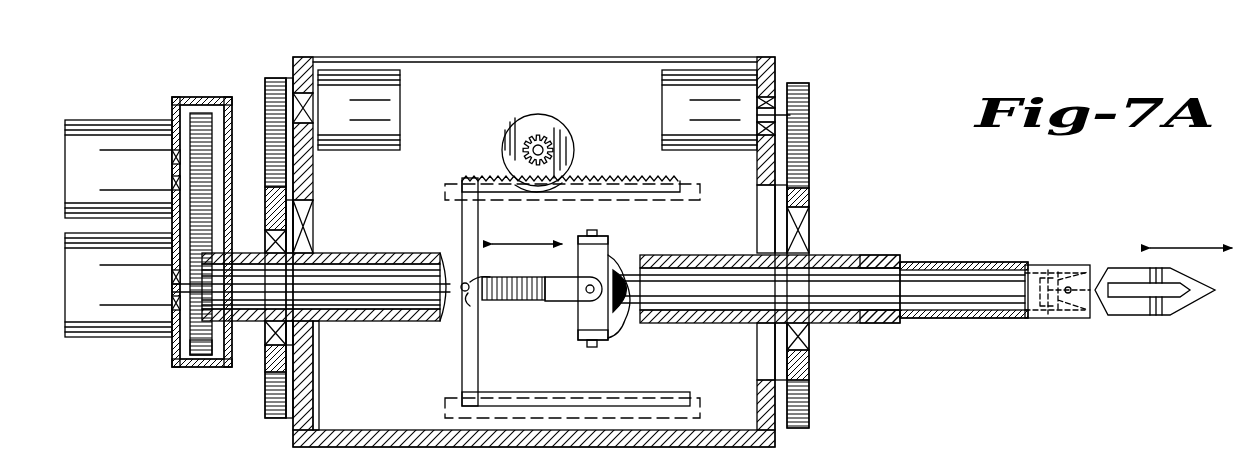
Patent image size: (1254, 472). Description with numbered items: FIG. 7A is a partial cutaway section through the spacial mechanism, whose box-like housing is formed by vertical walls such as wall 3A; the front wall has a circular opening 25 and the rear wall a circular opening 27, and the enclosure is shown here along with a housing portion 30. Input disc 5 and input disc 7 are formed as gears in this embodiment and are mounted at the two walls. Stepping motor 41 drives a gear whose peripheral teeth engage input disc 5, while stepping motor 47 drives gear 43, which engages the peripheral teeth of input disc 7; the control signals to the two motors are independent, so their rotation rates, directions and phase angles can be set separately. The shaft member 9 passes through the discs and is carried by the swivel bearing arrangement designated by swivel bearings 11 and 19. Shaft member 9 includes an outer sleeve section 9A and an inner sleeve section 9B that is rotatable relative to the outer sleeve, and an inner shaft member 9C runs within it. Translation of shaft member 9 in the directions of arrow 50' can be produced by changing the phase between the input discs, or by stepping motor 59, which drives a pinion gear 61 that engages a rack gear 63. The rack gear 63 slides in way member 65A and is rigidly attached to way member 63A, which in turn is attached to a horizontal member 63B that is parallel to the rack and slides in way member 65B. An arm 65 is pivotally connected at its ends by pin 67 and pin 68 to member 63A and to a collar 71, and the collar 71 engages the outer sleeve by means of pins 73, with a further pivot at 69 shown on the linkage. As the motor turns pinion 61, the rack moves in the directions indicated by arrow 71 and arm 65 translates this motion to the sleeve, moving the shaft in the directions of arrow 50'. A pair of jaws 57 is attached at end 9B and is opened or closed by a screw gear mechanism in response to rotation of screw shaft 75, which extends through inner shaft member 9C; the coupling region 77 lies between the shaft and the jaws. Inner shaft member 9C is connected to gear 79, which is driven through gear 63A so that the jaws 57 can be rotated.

The vertical wall 3A is at (776, 70).
The input disc 5 is at (815, 155).
The input disc 7 is at (258, 186).
The shaft member 9 is at (870, 246).
The outer sleeve section 9A is at (1092, 268).
The inner sleeve section 9B is at (890, 256).
The inner shaft member 9C is at (985, 262).
The swivel bearing 11 is at (800, 254).
The swivel bearing 19 is at (262, 236).
The circular opening 25 is at (770, 200).
The circular opening 27 is at (313, 362).
The housing 30 is at (302, 60).
The stepping motor 41 is at (662, 92).
The gear 43 is at (266, 105).
The stepping motor 47 is at (400, 108).
The arrow 50' is at (1192, 227).
The jaws 57 is at (1130, 330).
The stepping motor 59 is at (548, 120).
The pinion gear 61 is at (185, 97).
The rack gear 63 is at (130, 120).
The way member 63A is at (200, 115).
The horizontal member 63B is at (642, 392).
The arm 65 is at (100, 336).
The way member 65A is at (692, 200).
The way member 65B is at (700, 398).
The pin 67 is at (458, 300).
The pin 68 is at (608, 262).
The link arm 69 is at (585, 285).
The collar 71 is at (527, 240).
The pins 73 is at (592, 230).
The screw shaft 75 is at (358, 300).
The coupling detent 77 is at (1055, 320).
The gear 79 is at (200, 366).